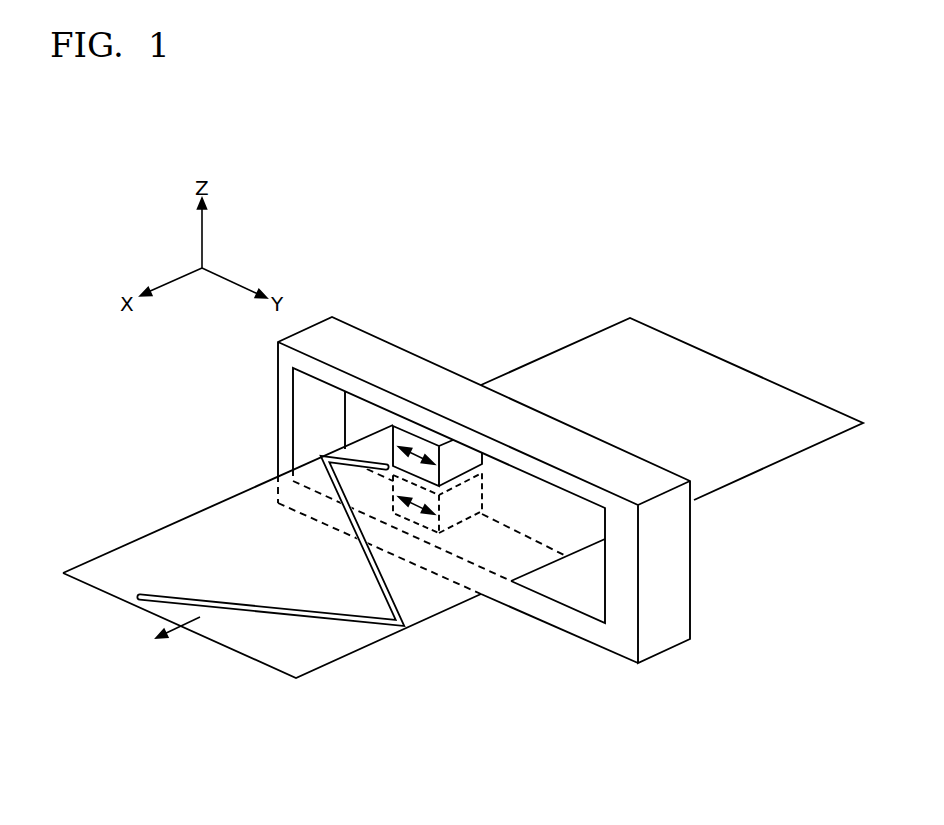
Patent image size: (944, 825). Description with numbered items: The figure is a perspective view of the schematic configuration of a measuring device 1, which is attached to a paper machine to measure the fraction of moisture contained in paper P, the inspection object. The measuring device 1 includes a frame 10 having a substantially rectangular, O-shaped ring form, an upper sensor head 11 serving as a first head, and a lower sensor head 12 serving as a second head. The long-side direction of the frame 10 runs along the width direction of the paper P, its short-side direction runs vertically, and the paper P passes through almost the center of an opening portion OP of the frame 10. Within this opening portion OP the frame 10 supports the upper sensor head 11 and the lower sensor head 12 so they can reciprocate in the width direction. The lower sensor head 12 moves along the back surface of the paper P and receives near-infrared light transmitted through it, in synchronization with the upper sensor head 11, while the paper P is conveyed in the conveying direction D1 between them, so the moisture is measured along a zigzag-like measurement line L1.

The measuring device 1 is at (540, 243).
The frame 10 is at (524, 511).
The upper sensor head 11 is at (455, 455).
The lower sensor head 12 is at (467, 512).
The paper P is at (708, 382).
The opening portion OP is at (590, 577).
The measurement line L1 is at (350, 628).
The conveying direction D1 is at (200, 620).